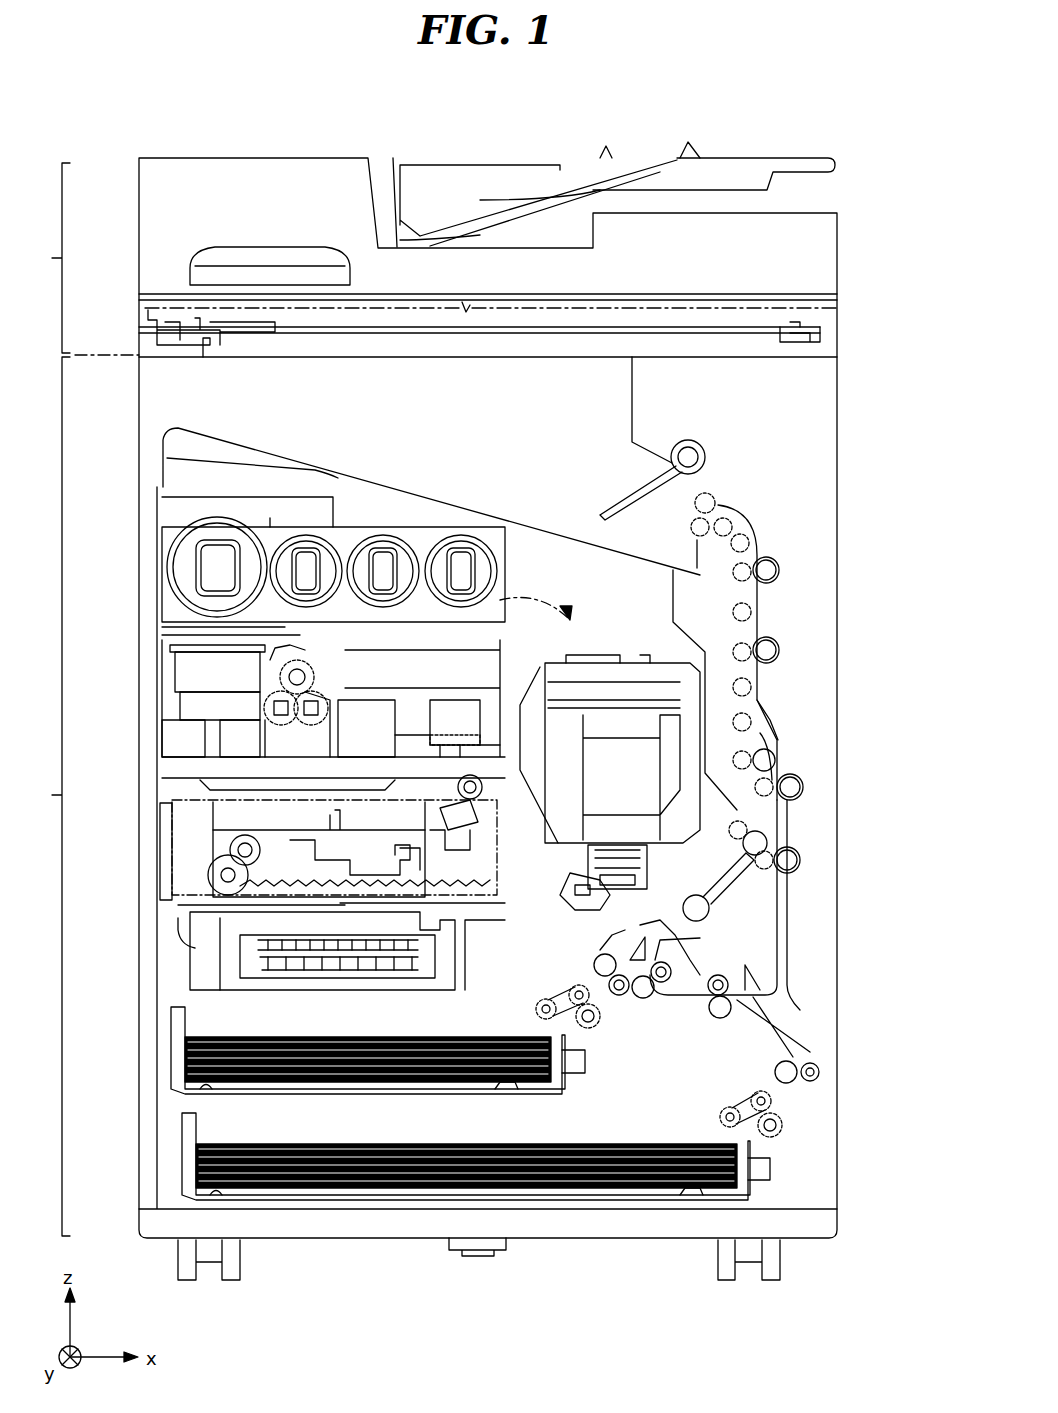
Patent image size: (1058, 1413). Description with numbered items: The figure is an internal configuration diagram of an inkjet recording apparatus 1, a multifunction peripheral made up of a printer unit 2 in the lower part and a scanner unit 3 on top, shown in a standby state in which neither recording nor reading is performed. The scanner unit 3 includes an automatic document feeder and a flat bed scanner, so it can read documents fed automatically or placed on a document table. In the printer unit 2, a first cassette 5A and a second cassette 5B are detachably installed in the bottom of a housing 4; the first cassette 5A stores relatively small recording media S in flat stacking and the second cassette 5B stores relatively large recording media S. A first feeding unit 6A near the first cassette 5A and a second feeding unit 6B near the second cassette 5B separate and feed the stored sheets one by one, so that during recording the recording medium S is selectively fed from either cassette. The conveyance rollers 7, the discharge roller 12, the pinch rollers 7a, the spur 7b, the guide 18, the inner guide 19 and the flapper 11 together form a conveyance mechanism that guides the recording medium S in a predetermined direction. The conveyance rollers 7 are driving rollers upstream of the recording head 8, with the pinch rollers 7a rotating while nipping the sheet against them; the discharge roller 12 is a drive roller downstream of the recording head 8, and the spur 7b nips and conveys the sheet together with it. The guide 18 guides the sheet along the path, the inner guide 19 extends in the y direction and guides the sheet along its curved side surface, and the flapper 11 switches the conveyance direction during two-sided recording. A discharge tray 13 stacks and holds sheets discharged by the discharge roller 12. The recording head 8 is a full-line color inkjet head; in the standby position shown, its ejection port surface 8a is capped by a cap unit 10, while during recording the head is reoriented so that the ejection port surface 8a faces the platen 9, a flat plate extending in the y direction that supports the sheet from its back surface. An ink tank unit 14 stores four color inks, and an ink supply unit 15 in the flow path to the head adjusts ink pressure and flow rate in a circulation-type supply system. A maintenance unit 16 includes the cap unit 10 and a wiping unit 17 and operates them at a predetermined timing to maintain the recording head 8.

The inkjet recording apparatus 1 is at (778, 146).
The printer unit 2 is at (435, 795).
The scanner unit 3 is at (435, 260).
The housing 4 is at (837, 442).
The first cassette 5A is at (180, 1053).
The second cassette 5B is at (195, 1162).
The first feeding unit 6A is at (594, 1026).
The second feeding unit 6B is at (782, 1128).
The conveyance rollers 7 is at (800, 860).
The pinch rollers 7a is at (622, 995).
The spur 7b is at (752, 688).
The recording head 8 is at (648, 787).
The ejection port surface 8a is at (628, 858).
The platen 9 is at (640, 880).
The cap unit 10 is at (740, 870).
The flapper 11 is at (762, 737).
The discharge roller 12 is at (710, 498).
The discharge tray 13 is at (441, 497).
The ink tank unit 14 is at (170, 534).
The ink supply unit 15 is at (162, 697).
The maintenance unit 16 is at (182, 950).
The wiping unit 17 is at (187, 825).
The guide 18 is at (760, 612).
The inner guide 19 is at (728, 955).
The recording medium S is at (492, 1037).